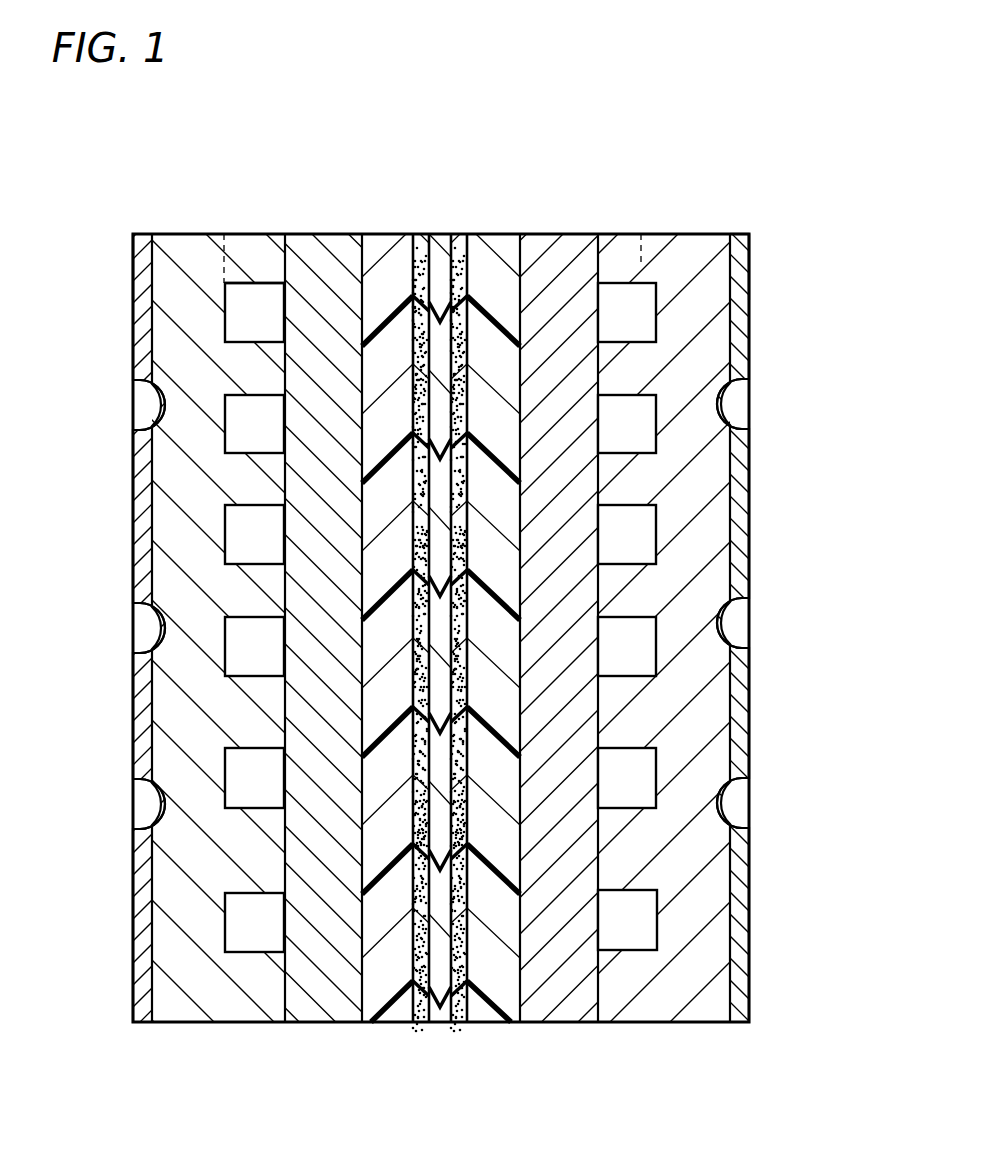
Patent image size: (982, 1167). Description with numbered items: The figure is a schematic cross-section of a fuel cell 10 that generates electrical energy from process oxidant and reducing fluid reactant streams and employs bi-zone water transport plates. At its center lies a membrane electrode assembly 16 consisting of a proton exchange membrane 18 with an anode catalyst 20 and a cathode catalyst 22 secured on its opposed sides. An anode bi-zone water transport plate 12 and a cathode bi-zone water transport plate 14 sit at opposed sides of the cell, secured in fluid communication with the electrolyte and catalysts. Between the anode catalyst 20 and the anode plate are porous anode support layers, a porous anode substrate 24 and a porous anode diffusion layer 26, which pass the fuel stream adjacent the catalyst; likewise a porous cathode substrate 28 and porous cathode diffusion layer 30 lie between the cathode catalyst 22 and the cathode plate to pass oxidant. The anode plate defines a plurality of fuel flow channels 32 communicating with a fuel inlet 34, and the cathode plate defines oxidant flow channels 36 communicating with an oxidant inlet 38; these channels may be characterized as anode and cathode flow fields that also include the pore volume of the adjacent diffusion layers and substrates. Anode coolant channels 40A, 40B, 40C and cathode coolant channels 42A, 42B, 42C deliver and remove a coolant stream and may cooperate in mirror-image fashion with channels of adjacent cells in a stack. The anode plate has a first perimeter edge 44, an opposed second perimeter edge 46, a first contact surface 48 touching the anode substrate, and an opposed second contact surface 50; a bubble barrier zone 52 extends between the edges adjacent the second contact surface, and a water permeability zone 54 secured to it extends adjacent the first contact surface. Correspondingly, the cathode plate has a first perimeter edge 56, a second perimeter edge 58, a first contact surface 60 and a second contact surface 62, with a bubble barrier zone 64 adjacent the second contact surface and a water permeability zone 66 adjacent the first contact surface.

The fuel cell 10 is at (690, 112).
The anode bi-zone water transport plate 12 is at (203, 990).
The cathode bi-zone water transport plate 14 is at (710, 974).
The membrane electrode assembly 16 is at (413, 212).
The proton exchange membrane 18 is at (437, 1022).
The anode catalyst 20 is at (427, 1022).
The cathode catalyst 22 is at (462, 1022).
The porous anode substrate 24 is at (307, 1022).
The porous anode diffusion layer 26 is at (392, 1022).
The porous cathode substrate 28 is at (577, 1020).
The porous cathode diffusion layer 30 is at (497, 1022).
The fuel flow channels 32 is at (253, 424).
The fuel inlet 34 is at (238, 276).
The oxidant flow channels 36 is at (622, 418).
The oxidant inlet 38 is at (636, 272).
The anode coolant channel 40A is at (145, 403).
The anode coolant channel 40B is at (145, 625).
The anode coolant channel 40C is at (145, 800).
The cathode coolant channel 42A is at (736, 405).
The cathode coolant channel 42B is at (736, 621).
The cathode coolant channel 42C is at (736, 800).
The first perimeter edge 44 is at (197, 234).
The second perimeter edge 46 is at (167, 1023).
The first contact surface 48 is at (292, 234).
The second contact surface 50 is at (133, 240).
The bubble barrier zone 52 is at (255, 306).
The water permeability zone 54 is at (190, 470).
The first perimeter edge 56 is at (690, 234).
The second perimeter edge 58 is at (642, 1023).
The first contact surface 60 is at (587, 234).
The second contact surface 62 is at (752, 236).
The bubble barrier zone 64 is at (750, 292).
The water permeability zone 66 is at (700, 470).